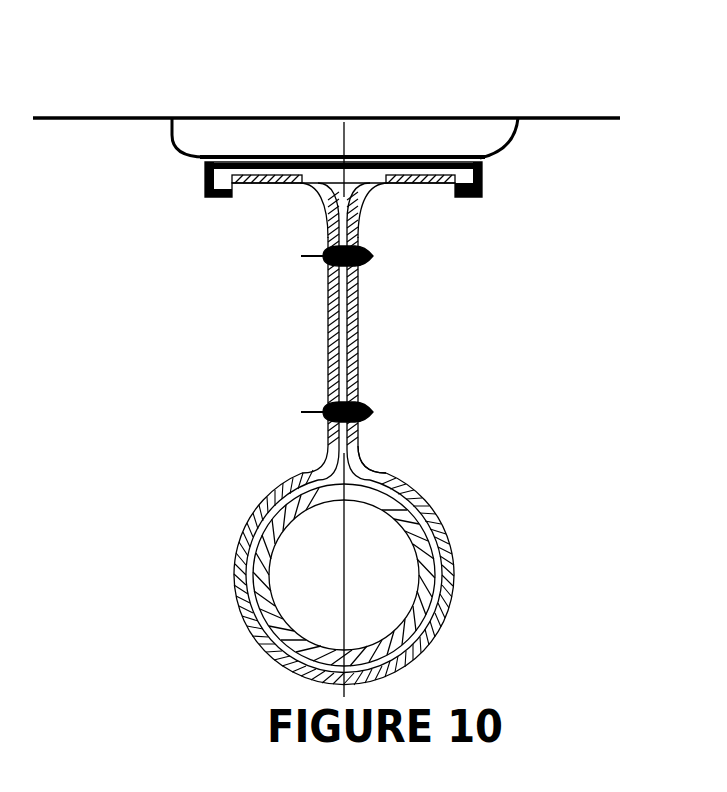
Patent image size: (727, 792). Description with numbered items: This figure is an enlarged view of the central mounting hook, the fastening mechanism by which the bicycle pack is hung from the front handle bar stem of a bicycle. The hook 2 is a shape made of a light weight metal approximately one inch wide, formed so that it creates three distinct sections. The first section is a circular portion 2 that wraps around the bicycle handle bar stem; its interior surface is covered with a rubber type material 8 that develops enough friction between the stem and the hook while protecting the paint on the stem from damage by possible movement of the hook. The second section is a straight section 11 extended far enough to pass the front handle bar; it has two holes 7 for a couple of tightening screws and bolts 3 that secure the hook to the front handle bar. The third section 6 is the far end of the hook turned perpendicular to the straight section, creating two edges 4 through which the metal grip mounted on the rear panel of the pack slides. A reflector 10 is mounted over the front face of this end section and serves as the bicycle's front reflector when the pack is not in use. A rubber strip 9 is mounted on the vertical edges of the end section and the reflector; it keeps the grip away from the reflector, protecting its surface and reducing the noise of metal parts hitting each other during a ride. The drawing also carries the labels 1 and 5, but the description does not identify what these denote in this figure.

The ring member 1 is at (450, 607).
The hook 2 is at (430, 505).
The tightening screws and bolts 3 is at (363, 257).
The edges of end section 4 is at (478, 197).
The ceiling fixture 5 is at (513, 137).
The third section of hook 6 is at (276, 185).
The holes 7 is at (327, 422).
The rubber type material 8 is at (392, 482).
The rubber strip 9 is at (474, 198).
The reflector 10 is at (379, 187).
The straight section of hook 11 is at (328, 356).